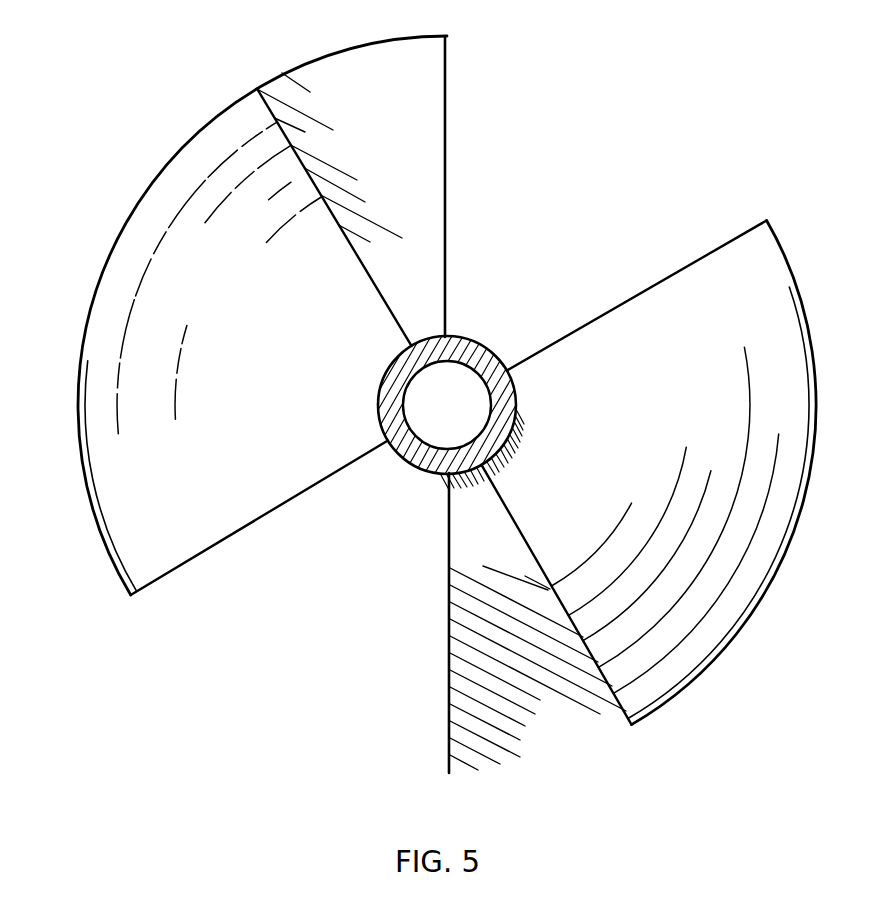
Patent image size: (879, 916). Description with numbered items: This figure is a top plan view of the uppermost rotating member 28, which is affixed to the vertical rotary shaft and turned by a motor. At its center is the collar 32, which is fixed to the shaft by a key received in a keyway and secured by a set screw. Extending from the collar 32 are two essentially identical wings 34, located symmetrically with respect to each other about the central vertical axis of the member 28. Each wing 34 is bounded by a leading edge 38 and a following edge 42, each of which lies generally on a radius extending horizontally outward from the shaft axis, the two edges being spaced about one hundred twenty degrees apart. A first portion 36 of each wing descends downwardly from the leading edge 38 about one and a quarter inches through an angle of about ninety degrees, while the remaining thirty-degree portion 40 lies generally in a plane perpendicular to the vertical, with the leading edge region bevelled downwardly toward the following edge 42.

The rotary member 28 is at (427, 368).
The collar 32 is at (477, 343).
The wing 34 is at (318, 55).
The first portion 36 is at (276, 432).
The leading edge 38 is at (620, 298).
The remaining portion 40 is at (409, 143).
The following edge 42 is at (446, 138).